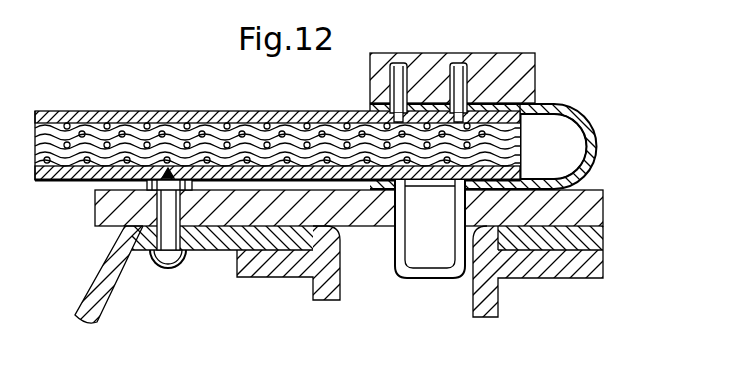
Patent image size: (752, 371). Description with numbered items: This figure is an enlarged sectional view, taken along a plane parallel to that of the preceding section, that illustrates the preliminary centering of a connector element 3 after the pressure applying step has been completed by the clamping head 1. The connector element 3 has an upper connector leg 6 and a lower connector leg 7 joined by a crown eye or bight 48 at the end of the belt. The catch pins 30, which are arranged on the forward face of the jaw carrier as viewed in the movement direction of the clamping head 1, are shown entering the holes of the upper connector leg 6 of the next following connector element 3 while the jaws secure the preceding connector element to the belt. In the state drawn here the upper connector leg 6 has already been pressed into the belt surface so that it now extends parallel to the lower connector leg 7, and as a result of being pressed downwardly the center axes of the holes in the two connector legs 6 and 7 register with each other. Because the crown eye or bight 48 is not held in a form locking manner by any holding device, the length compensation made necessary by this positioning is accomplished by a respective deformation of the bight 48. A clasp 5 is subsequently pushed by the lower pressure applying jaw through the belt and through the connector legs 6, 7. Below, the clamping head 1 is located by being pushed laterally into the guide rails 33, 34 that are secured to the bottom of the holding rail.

The clamping head 1 is at (491, 298).
The connector element 3 is at (596, 97).
The clasp 5 is at (428, 277).
The upper connector leg 6 is at (490, 116).
The lower connector leg 7 is at (462, 195).
The catch pin 30 is at (399, 100).
The guide rail 33 is at (604, 267).
The guide rail 34 is at (268, 270).
The crown eye or bight 48 is at (598, 150).